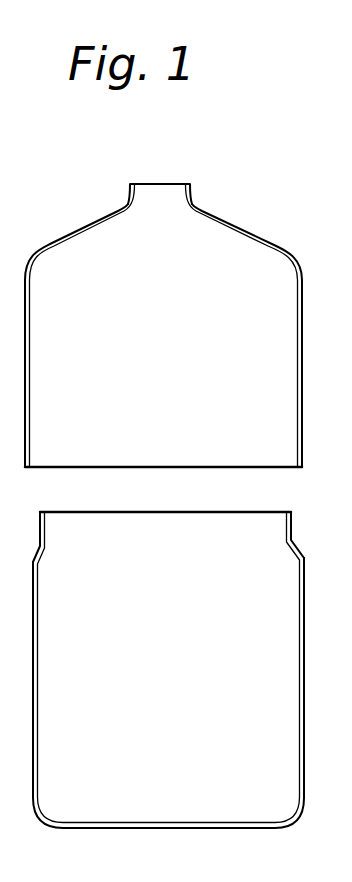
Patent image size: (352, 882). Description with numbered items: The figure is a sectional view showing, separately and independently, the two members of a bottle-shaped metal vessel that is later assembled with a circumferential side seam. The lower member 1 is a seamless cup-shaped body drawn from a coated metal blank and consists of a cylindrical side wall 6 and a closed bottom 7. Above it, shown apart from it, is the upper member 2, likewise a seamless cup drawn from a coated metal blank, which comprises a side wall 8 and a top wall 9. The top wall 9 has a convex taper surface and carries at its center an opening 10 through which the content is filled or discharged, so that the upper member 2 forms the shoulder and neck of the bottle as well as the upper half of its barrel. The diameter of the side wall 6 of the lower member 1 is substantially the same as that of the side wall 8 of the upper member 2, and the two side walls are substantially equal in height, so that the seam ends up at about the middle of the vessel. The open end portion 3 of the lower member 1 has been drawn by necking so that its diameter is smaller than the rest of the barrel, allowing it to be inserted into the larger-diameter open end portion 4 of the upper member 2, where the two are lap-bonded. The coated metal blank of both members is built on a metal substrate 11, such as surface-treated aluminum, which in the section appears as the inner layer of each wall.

The lower member 1 is at (173, 657).
The upper member 2 is at (170, 348).
The open end portion of the lower member 3 is at (39, 517).
The open end portion of the upper member 4 is at (27, 470).
The side wall of the lower member 6 is at (304, 680).
The bottom 7 is at (165, 828).
The side wall of the upper member 8 is at (303, 337).
The top wall 9 is at (246, 228).
The opening 10 is at (173, 182).
The metal substrate 11 is at (303, 425).